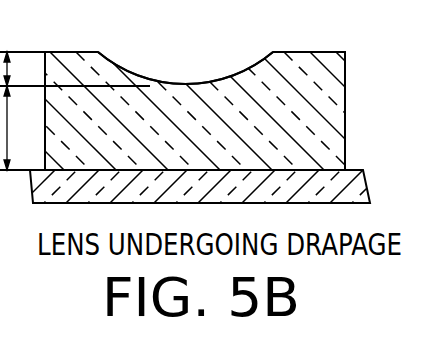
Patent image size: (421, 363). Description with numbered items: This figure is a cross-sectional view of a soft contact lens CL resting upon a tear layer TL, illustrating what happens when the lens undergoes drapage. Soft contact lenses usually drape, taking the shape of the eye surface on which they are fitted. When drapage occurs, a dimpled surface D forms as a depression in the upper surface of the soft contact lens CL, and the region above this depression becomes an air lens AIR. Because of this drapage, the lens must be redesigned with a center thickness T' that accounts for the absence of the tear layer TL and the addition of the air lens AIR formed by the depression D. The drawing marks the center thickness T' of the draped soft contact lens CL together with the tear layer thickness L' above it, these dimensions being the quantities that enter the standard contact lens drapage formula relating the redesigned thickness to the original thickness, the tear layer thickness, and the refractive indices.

The dimpled surface D is at (123, 70).
The soft contact lens CL is at (210, 127).
The tear layer TL is at (216, 185).
The air lens AIR is at (315, 25).
The tear layer thickness L' is at (75, 69).
The redesigned center thickness T' is at (16, 128).